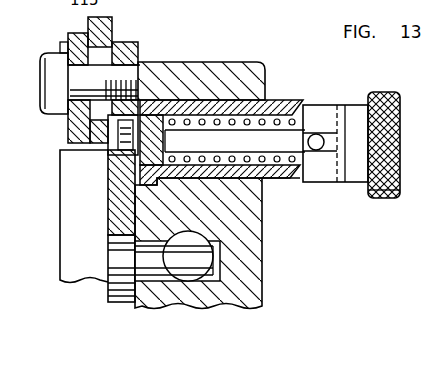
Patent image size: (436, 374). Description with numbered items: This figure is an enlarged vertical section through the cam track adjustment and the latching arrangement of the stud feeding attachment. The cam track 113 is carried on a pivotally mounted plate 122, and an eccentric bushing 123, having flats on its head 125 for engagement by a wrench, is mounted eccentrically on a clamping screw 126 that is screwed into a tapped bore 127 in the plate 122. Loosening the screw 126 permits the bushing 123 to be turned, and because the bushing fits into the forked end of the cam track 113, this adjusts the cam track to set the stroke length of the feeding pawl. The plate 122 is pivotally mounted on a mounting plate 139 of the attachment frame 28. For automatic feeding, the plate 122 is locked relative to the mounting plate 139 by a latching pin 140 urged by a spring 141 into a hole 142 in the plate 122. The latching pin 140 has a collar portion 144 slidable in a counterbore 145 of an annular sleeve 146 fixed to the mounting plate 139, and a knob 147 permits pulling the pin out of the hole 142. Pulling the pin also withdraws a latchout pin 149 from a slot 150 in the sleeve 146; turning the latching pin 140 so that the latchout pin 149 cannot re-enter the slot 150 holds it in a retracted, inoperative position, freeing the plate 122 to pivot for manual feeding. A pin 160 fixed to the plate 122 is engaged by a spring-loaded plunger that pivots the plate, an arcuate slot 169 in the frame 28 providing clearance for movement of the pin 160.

The clamping screw 126 is at (52, 58).
The tapped bore 127 is at (151, 118).
The collar portion 144 is at (198, 100).
The counterbore 145 is at (228, 114).
The latching pin 140 is at (268, 138).
The sleeve 146 is at (320, 110).
The slot 150 is at (345, 128).
The head 125 is at (68, 122).
The eccentric bushing 123 is at (95, 125).
The cam track 113 is at (59, 216).
The hole 142 is at (125, 158).
The spring 141 is at (267, 180).
The latchout pin 149 is at (315, 150).
The knob 147 is at (392, 197).
The mounting plate 139 is at (248, 255).
The pin 160 is at (145, 254).
The plate 122 is at (107, 310).
The arcuate slot 169 is at (152, 285).
The attachment frame 28 is at (182, 312).